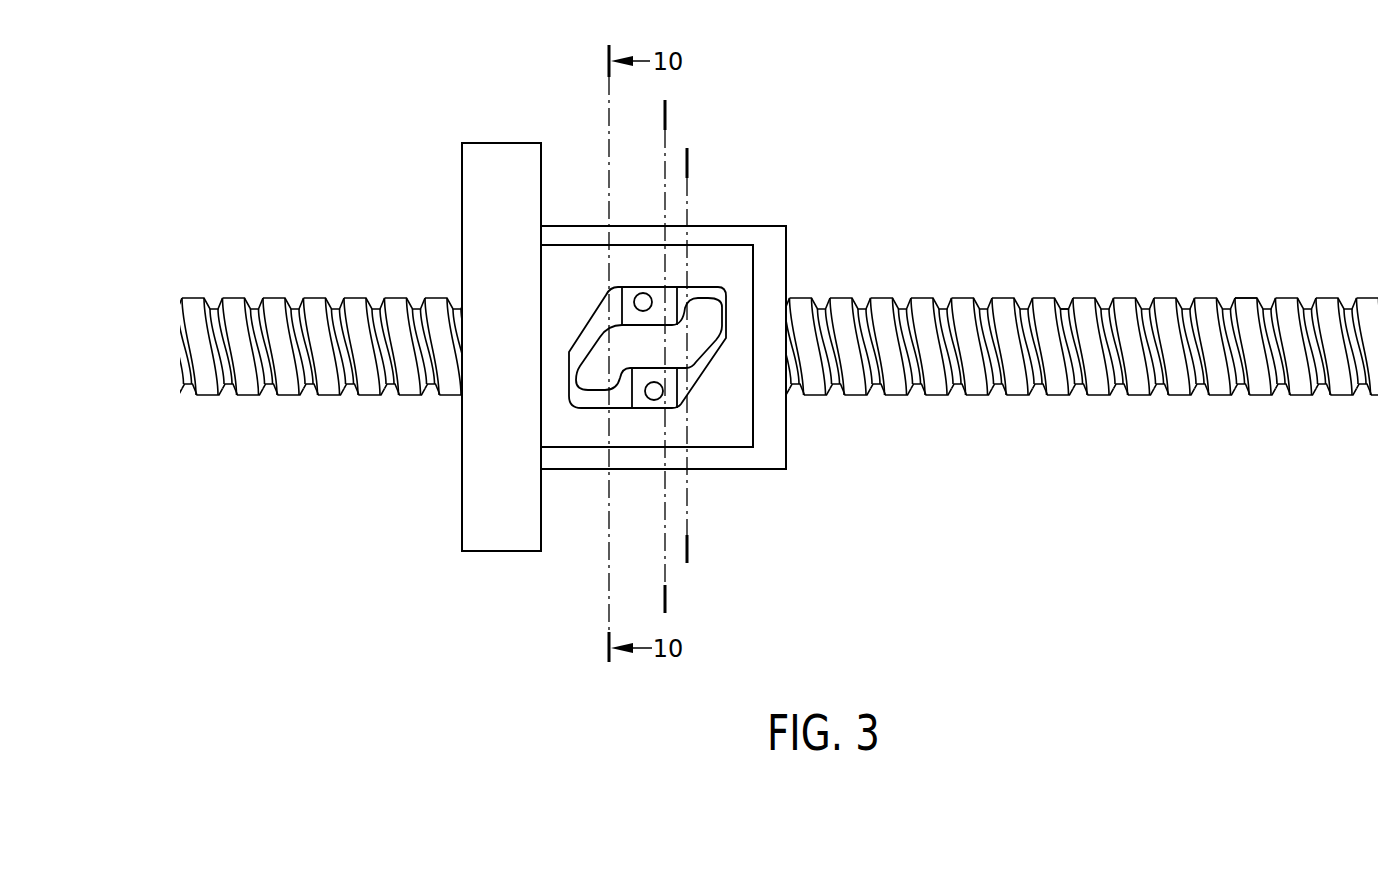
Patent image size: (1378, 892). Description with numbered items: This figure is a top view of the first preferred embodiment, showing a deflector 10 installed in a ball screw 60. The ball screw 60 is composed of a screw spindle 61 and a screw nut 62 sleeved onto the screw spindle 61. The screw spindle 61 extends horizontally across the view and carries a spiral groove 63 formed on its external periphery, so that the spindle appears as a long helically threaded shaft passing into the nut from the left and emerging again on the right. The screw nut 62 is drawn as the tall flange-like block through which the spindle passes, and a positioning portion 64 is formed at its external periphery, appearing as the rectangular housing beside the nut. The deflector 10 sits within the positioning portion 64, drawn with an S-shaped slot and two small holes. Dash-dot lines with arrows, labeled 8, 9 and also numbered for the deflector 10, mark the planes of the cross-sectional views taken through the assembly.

The deflector 10 is at (591, 300).
The section line 8- 8 is at (727, 552).
The section line 9- 9 is at (708, 600).
The ball screw 60 is at (1171, 264).
The screw spindle 61 is at (1240, 299).
The screw nut 62 is at (460, 183).
The spiral groove 63 is at (1065, 308).
The positioning portion 64 is at (738, 436).